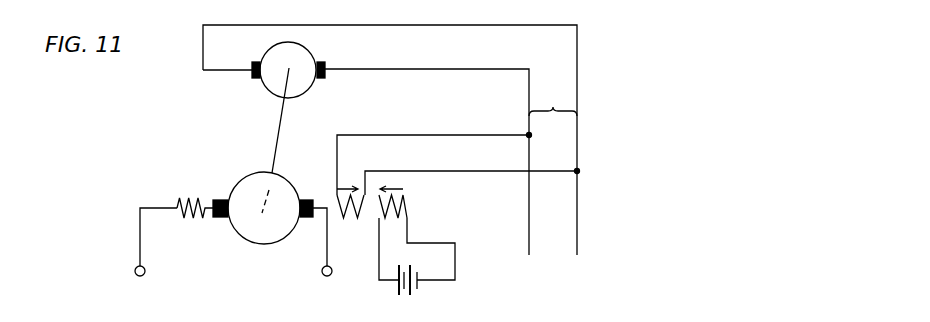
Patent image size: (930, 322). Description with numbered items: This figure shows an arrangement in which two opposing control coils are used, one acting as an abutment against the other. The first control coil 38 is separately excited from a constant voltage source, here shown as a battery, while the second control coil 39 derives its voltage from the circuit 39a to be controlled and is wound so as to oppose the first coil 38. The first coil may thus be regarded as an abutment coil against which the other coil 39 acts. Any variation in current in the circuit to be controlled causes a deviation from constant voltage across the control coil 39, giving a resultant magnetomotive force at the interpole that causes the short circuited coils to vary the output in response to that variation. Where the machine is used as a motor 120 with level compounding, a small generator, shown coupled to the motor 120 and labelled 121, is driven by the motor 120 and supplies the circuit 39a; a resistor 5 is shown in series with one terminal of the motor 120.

The resistor 5 is at (180, 200).
The first control coil 38 is at (405, 204).
The second control coil 39 is at (332, 200).
The circuit to be controlled 39a is at (553, 104).
The motor 120 is at (258, 220).
The generator 121 is at (282, 79).